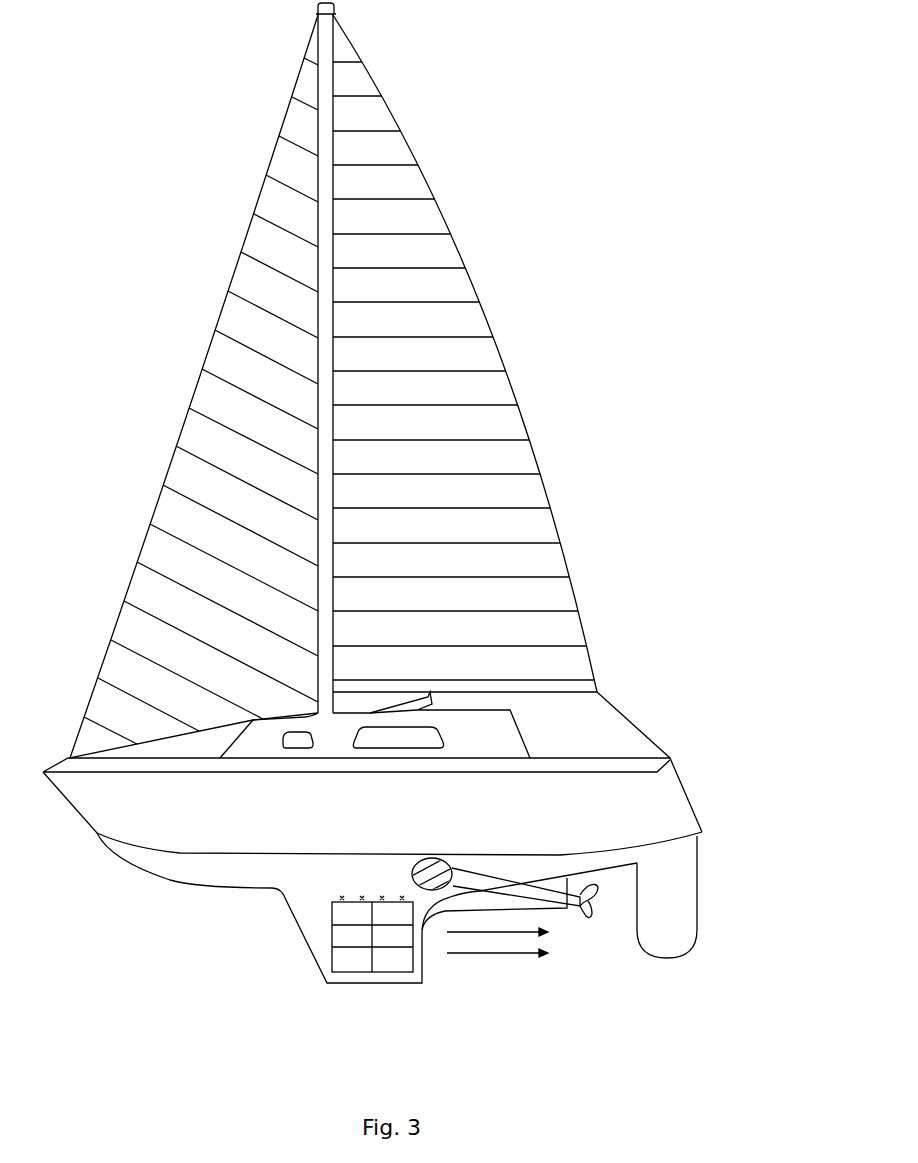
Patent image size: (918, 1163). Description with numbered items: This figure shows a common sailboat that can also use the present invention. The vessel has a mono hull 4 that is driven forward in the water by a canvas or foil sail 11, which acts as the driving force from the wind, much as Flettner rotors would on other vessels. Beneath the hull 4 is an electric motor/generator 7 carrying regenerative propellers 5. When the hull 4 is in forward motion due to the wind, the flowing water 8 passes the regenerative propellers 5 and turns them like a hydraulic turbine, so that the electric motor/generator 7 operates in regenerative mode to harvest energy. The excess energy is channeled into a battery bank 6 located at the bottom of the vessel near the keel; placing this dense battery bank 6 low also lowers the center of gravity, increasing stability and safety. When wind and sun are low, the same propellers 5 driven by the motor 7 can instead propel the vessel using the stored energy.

The hull 4 is at (117, 805).
The regenerative propellers 5 is at (593, 922).
The battery bank 6 is at (343, 917).
The electric motor/generator 7 is at (443, 855).
The water flow causing power generation to charge batteries 8 is at (480, 960).
The canvas or foil sail 11 is at (432, 291).